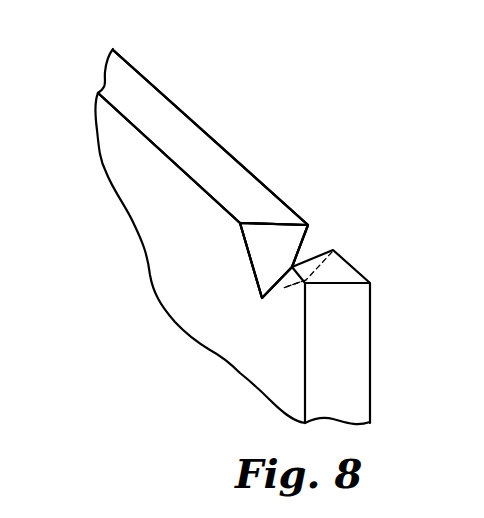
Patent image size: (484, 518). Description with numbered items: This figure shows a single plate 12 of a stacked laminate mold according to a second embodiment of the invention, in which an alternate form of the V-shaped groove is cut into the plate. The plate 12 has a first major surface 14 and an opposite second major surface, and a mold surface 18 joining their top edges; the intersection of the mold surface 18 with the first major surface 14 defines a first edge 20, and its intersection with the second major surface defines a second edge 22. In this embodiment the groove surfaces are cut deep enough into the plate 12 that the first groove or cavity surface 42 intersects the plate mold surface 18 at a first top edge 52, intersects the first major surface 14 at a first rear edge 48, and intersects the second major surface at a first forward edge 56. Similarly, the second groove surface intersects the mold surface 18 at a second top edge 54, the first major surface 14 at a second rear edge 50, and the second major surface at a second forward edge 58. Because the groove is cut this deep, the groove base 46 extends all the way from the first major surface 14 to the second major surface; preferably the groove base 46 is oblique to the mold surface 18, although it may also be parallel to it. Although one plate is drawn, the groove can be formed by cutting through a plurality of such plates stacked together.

The plate 12 is at (247, 88).
The first major surface 14 is at (183, 302).
The mold surface 18 is at (130, 88).
The first edge 20 is at (120, 117).
The second edge 22 is at (183, 112).
The first groove surface 42 is at (270, 240).
The groove base 46 is at (283, 288).
The first rear edge 48 is at (242, 242).
The second rear edge 50 is at (270, 282).
The first top edge 52 is at (258, 220).
The second top edge 54 is at (327, 250).
The first forward edge 56 is at (305, 243).
The second forward edge 58 is at (325, 263).